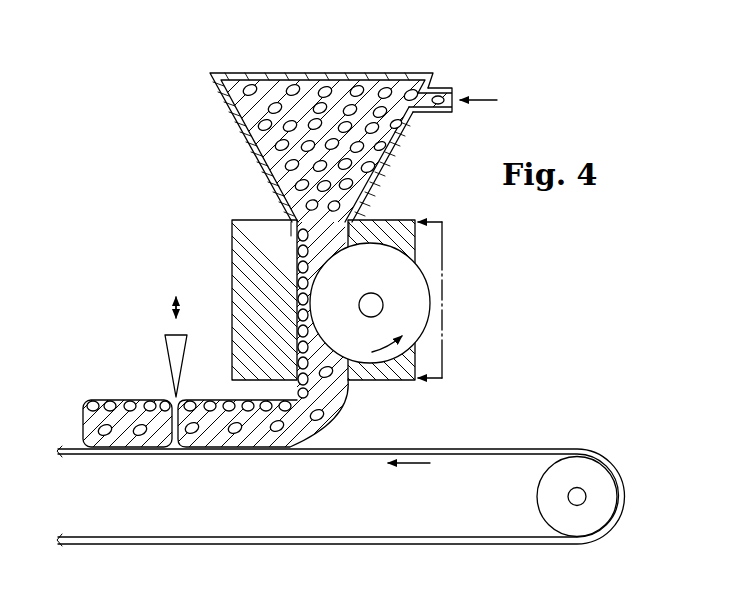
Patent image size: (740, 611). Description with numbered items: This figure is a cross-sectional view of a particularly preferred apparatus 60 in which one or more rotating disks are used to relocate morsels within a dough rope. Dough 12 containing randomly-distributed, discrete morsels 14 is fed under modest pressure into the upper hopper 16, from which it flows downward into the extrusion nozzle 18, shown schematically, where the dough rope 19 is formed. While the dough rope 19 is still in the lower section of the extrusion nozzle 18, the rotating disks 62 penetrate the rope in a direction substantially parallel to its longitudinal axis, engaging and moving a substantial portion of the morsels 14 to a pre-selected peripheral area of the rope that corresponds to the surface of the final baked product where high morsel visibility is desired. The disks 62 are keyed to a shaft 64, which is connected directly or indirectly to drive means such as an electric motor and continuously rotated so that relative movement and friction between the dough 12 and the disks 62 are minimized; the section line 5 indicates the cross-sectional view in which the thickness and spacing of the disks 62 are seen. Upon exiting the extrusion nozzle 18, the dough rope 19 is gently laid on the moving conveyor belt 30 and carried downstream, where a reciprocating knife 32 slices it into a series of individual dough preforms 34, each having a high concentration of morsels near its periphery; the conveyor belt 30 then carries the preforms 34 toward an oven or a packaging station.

The dough 12 is at (440, 88).
The morsels 14 is at (293, 86).
The upper hopper 16 is at (234, 120).
The extrusion nozzle 18 is at (386, 222).
The dough rope 19 is at (292, 220).
The conveyor belt 30 is at (289, 455).
The reciprocating knife 32 is at (165, 346).
The dough preform 34 is at (124, 444).
The apparatus 60 is at (480, 270).
The disk 62 is at (385, 277).
The shaft 64 is at (359, 306).
The section line 5- 5 is at (430, 302).